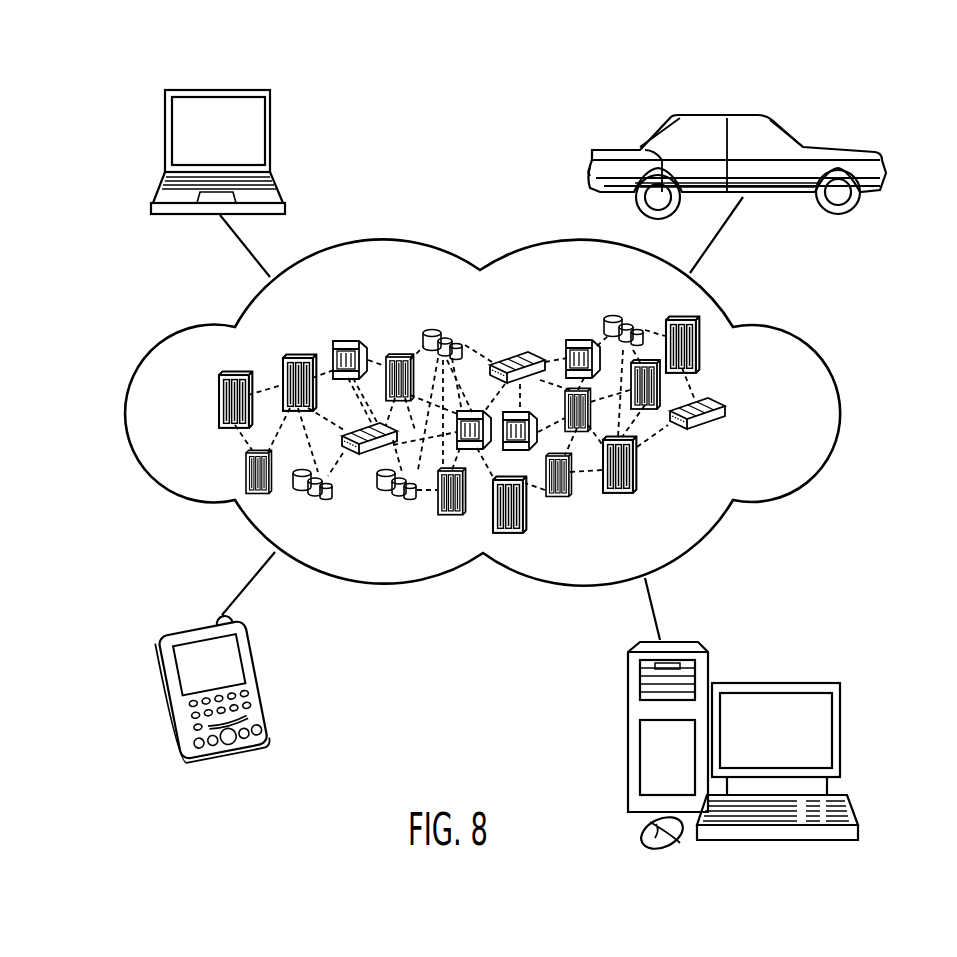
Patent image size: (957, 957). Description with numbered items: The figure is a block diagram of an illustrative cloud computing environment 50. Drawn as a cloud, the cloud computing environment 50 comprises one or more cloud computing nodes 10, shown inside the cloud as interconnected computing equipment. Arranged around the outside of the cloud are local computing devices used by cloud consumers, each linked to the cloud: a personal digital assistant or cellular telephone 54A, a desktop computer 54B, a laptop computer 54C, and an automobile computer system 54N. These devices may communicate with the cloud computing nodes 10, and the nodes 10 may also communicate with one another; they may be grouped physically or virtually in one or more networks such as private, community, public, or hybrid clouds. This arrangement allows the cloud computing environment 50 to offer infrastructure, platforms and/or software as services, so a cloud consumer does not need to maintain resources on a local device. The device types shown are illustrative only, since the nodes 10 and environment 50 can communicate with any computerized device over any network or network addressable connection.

The cloud computing node 10 is at (733, 414).
The cloud computing environment 50 is at (787, 330).
The personal digital assistant (PDA) or cellular telephone 54A is at (200, 627).
The desktop computer 54B is at (775, 683).
The laptop computer 54C is at (218, 88).
The automobile computer system 54N is at (718, 125).